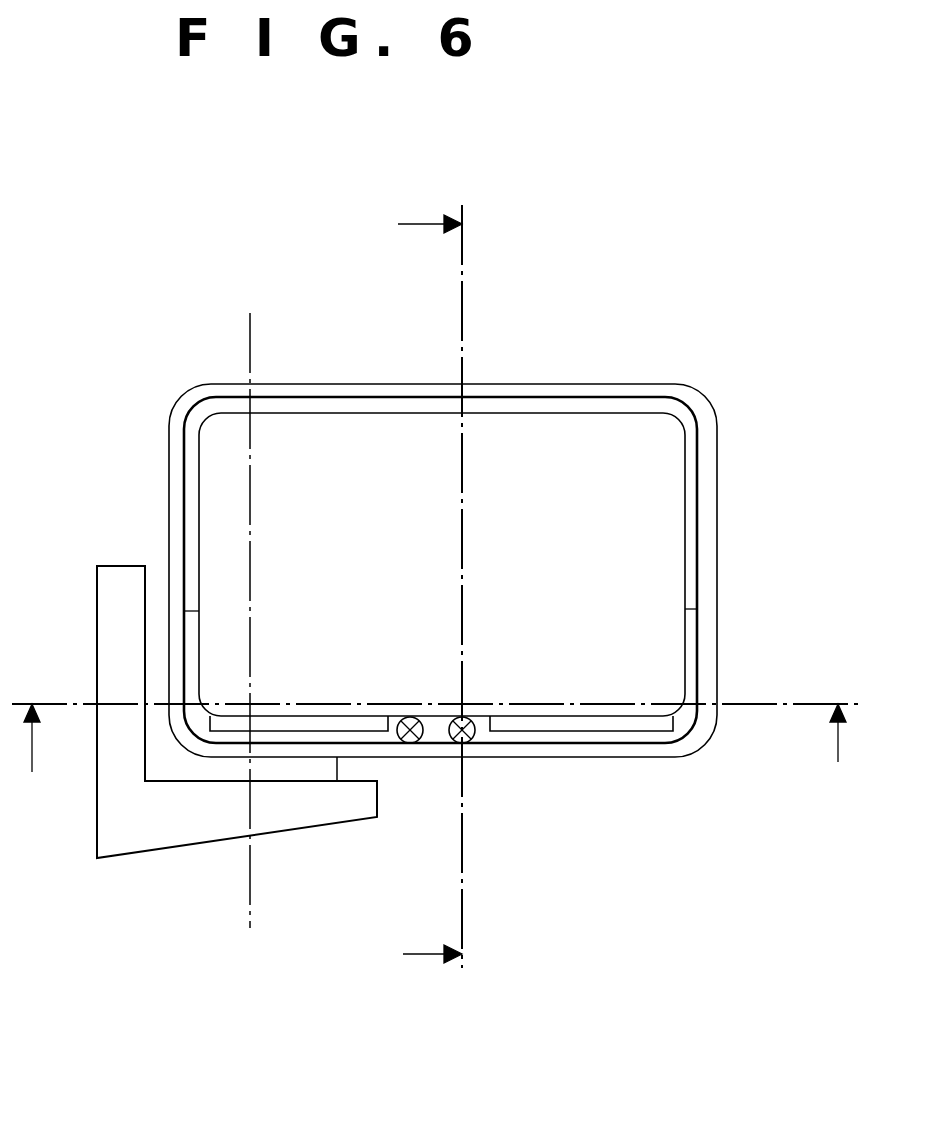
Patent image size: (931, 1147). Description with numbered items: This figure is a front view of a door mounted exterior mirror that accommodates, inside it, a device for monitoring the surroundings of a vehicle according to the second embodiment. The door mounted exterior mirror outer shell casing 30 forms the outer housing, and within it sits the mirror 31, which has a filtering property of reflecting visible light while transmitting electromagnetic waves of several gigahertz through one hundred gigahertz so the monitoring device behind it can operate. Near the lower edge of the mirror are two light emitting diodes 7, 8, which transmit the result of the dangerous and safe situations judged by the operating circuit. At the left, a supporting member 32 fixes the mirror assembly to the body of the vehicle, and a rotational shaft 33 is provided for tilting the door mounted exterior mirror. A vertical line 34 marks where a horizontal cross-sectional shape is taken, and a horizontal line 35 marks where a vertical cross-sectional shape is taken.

The light emitting diode 7 is at (471, 737).
The light emitting diode 8 is at (422, 739).
The door mounted exterior mirror outer shell casing 30 is at (325, 384).
The mirror 31 is at (388, 468).
The supporting member 32 is at (190, 848).
The rotational shaft 33 is at (252, 850).
The line 34 is at (465, 856).
The line 35 is at (790, 706).